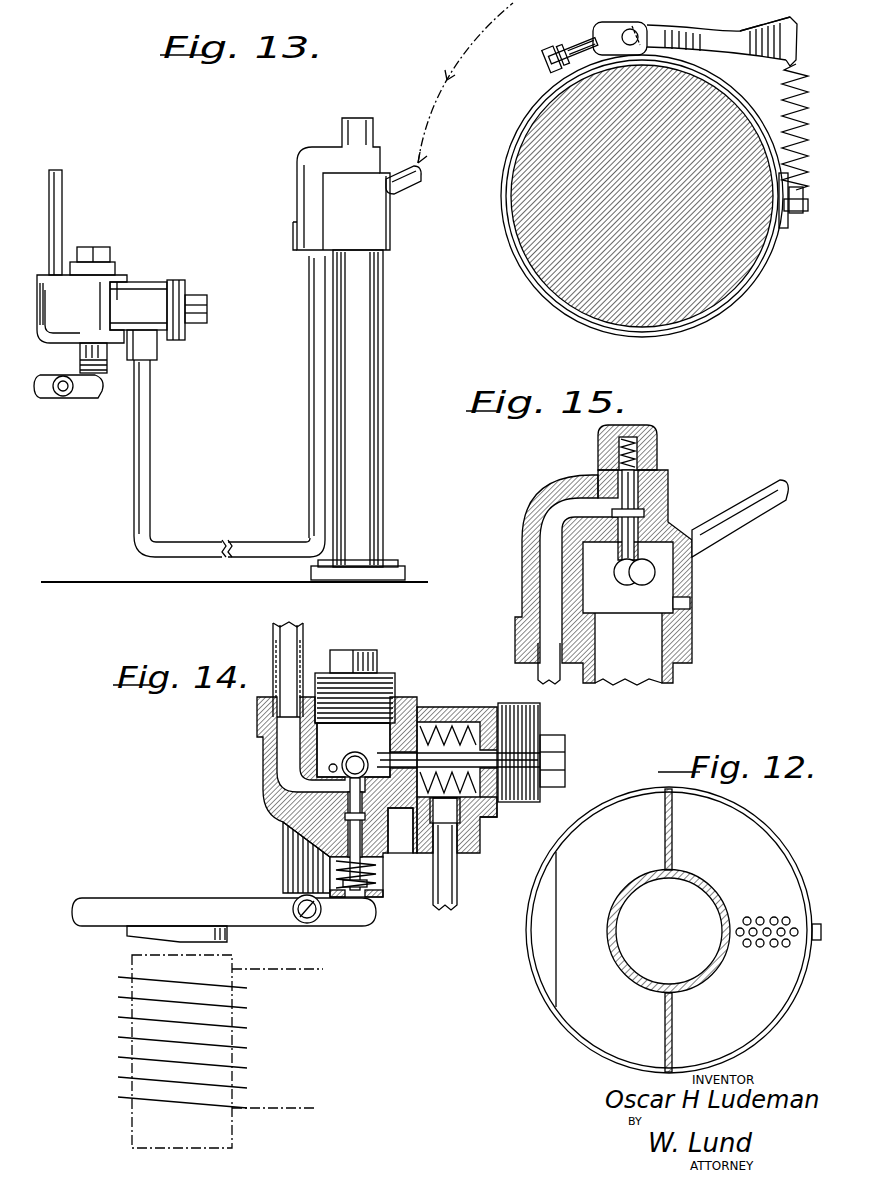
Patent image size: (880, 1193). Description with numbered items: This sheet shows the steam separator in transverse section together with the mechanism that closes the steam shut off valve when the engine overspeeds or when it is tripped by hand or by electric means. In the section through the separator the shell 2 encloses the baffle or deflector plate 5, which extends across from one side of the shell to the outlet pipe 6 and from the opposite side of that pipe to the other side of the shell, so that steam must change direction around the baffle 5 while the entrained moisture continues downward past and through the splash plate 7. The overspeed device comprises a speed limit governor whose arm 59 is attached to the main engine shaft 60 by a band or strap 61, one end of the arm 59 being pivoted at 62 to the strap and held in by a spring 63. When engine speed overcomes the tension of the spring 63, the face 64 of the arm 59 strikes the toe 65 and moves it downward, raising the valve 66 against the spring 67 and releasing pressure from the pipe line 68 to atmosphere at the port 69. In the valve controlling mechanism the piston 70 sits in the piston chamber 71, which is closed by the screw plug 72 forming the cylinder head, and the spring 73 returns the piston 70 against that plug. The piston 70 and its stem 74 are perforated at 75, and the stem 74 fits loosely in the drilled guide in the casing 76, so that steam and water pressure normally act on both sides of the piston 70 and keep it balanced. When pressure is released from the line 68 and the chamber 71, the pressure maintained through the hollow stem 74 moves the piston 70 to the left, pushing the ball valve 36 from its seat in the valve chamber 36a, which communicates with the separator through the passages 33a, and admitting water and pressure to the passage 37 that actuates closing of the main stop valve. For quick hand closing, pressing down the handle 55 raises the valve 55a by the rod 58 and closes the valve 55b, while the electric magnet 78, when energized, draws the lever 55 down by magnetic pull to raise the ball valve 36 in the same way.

In FIG. 12, the shell of the separator 2 is at (532, 968).
In FIG. 12, the baffle or deflector plate 5 is at (665, 1036).
In FIG. 12, the outlet pipe 6 is at (654, 959).
In FIG. 12, the splash plate 7 is at (577, 908).
In FIG. 14, the passages 33a is at (348, 767).
In FIG. 14, the ball valve 36 is at (303, 782).
In FIG. 14, the valve chamber 36a is at (333, 739).
In FIG. 13, the passage 37 is at (63, 211).
In FIG. 14, the passage 37 is at (287, 701).
In FIG. 13, the handle 55 is at (48, 392).
In FIG. 14, the handle 55 is at (240, 906).
In FIG. 14, the valve 55a is at (280, 829).
In FIG. 14, the valve 55b is at (380, 884).
In FIG. 14, the rod 58 is at (386, 852).
In FIG. 13, the speed limit governor arm 59 is at (727, 42).
In FIG. 13, the main engine shaft 60 is at (540, 200).
In FIG. 13, the band or strap 61 is at (530, 273).
In FIG. 13, the pivot 62 is at (593, 32).
In FIG. 13, the spring 63 is at (784, 92).
In FIG. 13, the face of the arm 64 is at (775, 13).
In FIG. 13, the toe 65 is at (421, 174).
In FIG. 15, the toe 65 is at (752, 518).
In FIG. 15, the valve 66 is at (642, 513).
In FIG. 15, the spring 67 is at (657, 442).
In FIG. 13, the pipe line 68 is at (140, 460).
In FIG. 15, the pipe line 68 is at (553, 673).
In FIG. 14, the pipe line 68 is at (452, 885).
In FIG. 15, the port 69 is at (690, 605).
In FIG. 14, the piston 70 is at (485, 708).
In FIG. 14, the piston chamber 71 is at (432, 708).
In FIG. 13, the screw plug 72 is at (198, 305).
In FIG. 14, the screw plug 72 is at (523, 744).
In FIG. 14, the spring 73 is at (490, 816).
In FIG. 14, the stem 74 is at (477, 824).
In FIG. 14, the perforation 75 is at (564, 781).
In FIG. 13, the casing 76 is at (134, 298).
In FIG. 14, the casing 76 is at (397, 694).
In FIG. 14, the electric magnet 78 is at (220, 1037).